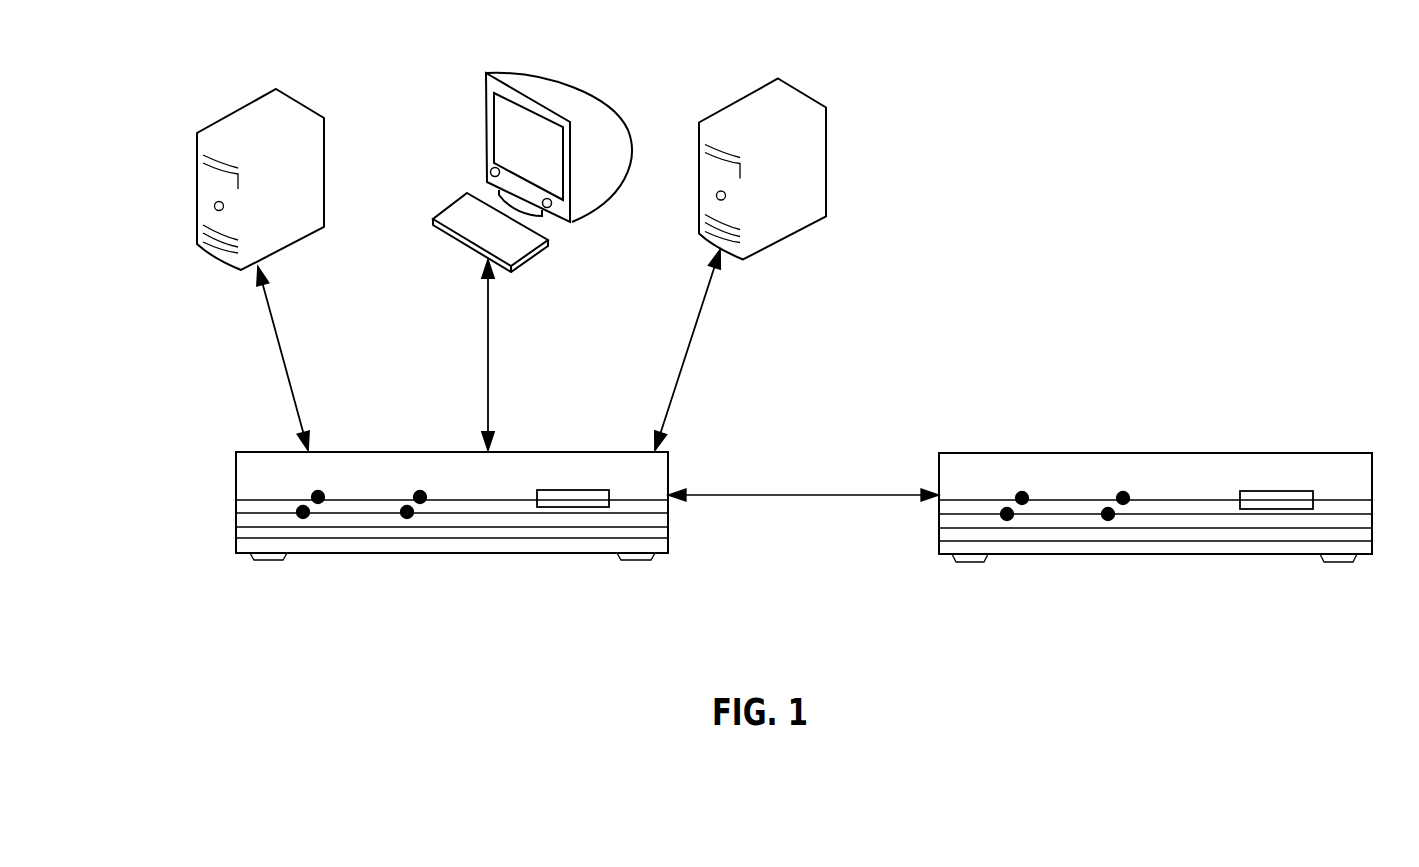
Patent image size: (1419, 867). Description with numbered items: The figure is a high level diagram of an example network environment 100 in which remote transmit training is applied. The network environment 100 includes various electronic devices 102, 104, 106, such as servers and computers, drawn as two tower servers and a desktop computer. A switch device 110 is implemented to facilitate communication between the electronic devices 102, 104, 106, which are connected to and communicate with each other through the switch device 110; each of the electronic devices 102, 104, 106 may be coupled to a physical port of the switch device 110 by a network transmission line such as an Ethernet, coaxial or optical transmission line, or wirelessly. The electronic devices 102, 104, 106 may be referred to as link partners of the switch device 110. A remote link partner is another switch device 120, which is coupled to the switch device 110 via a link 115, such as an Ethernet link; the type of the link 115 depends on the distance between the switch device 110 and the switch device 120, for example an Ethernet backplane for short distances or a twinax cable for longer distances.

The network environment 100 is at (1244, 139).
The electronic device 102 is at (257, 99).
The electronic device 104 is at (492, 76).
The electronic device 106 is at (750, 94).
The switch device 110 is at (250, 452).
The link 115 is at (803, 483).
The switch device 120 is at (1345, 453).